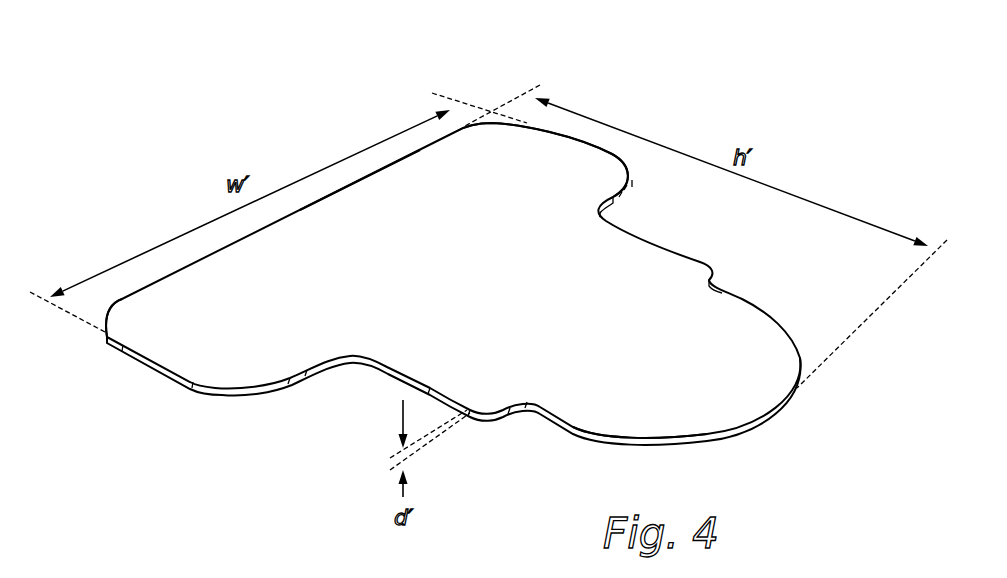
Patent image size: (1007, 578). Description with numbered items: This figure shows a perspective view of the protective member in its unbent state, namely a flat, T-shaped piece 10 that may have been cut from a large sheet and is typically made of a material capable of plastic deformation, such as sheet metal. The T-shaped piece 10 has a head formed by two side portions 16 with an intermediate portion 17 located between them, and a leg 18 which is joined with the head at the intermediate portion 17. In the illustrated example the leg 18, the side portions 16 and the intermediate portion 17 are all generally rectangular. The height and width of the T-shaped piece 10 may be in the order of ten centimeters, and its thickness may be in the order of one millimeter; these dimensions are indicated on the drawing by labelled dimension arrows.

The T-shaped piece 10 is at (203, 90).
The side portions 16 is at (550, 150).
The intermediate portion 17 is at (333, 233).
The leg 18 is at (592, 417).